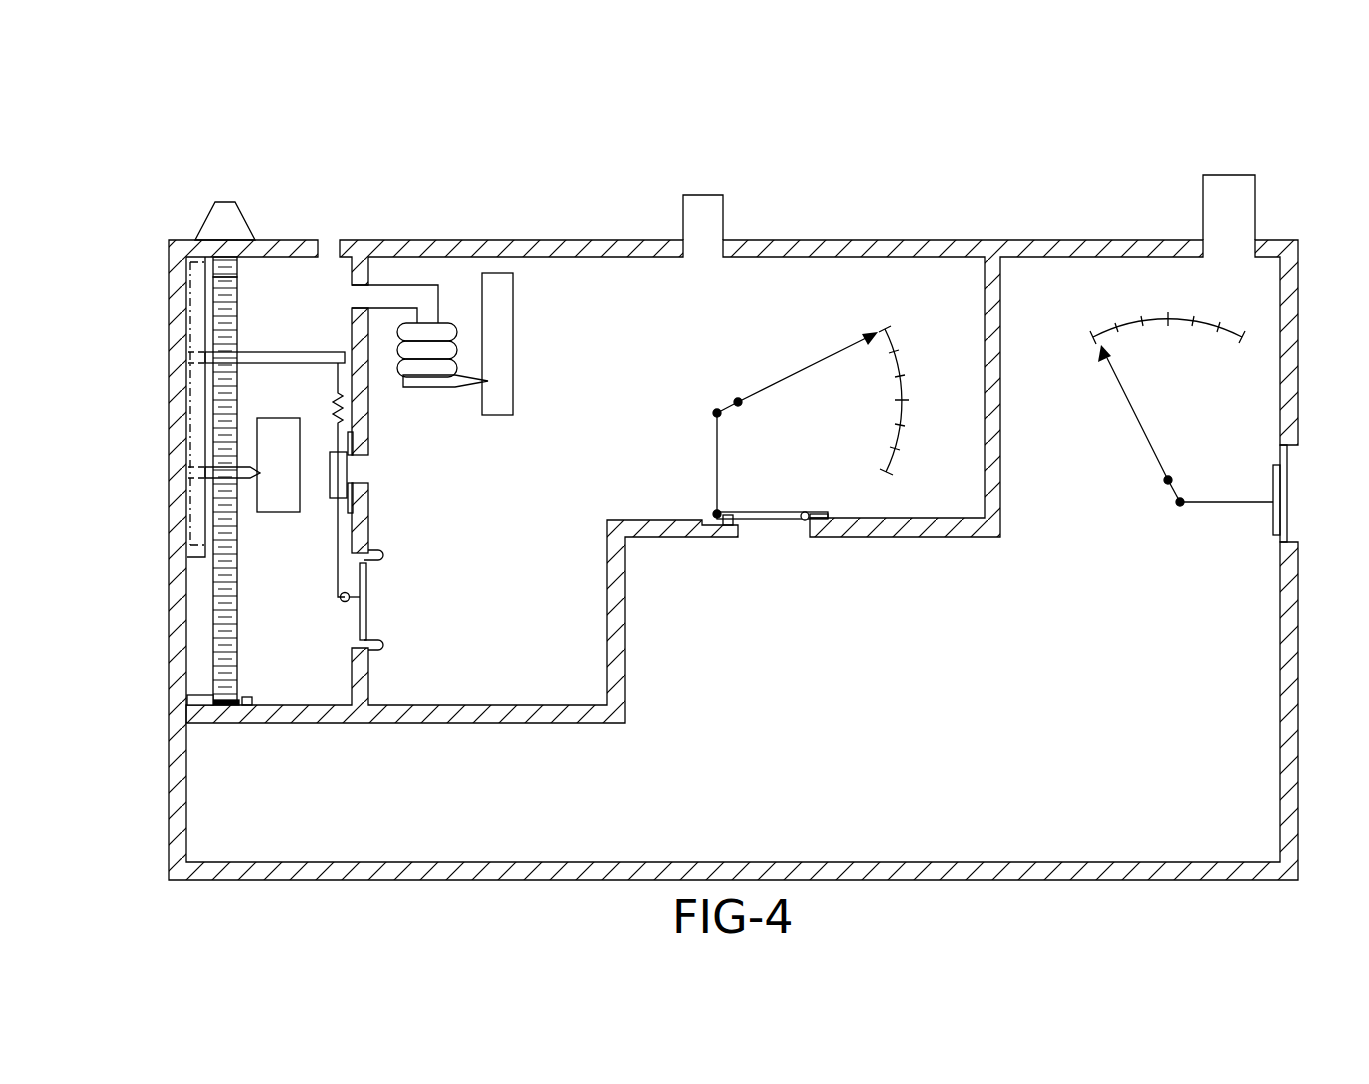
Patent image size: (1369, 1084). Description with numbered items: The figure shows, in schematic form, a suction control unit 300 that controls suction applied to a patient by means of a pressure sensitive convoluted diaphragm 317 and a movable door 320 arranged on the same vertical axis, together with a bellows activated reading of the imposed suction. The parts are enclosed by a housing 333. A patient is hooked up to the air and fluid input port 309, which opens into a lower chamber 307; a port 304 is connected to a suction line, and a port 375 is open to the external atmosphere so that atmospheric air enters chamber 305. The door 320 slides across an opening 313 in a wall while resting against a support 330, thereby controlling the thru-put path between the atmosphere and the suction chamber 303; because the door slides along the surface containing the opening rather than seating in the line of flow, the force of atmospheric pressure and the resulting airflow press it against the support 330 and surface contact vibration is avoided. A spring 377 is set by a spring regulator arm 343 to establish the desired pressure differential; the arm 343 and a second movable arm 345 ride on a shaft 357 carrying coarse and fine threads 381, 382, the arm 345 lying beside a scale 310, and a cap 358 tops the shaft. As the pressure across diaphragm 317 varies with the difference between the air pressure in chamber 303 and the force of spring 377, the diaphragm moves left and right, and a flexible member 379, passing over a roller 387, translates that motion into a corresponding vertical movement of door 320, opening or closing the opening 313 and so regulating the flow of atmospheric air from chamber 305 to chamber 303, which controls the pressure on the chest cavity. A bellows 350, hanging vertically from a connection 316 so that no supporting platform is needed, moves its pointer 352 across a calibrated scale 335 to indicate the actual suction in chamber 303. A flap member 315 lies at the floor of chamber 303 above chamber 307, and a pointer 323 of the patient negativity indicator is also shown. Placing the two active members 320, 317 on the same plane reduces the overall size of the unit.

The suction control unit 300 is at (116, 626).
The suction chamber 303 is at (554, 529).
The suction port 304 is at (723, 212).
The atmospheric chamber 305 is at (327, 679).
The chamber 307 is at (906, 674).
The air and fluid input port 309 is at (1203, 205).
The pressure scale 310 is at (257, 447).
The opening 313 is at (362, 470).
The flapper valve 315 is at (766, 528).
The conduit 316 is at (369, 270).
The convoluted diaphragm 317 is at (367, 618).
The door 320 is at (330, 490).
The patient negativity needle 323 is at (1106, 432).
The support 330 is at (350, 443).
The housing 333 is at (172, 217).
The calibrated scale 335 is at (513, 348).
The spring regulator arm 343 is at (257, 352).
The movable arm 345 is at (210, 480).
The bellows 350 is at (450, 323).
The pointer 352 is at (450, 388).
The shaft 357 is at (213, 302).
The adjustment knob 358 is at (242, 218).
The atmospheric port 375 is at (333, 247).
The spring 377 is at (335, 405).
The flexible member 379 is at (338, 563).
The coarse thread 381 is at (233, 632).
The fine thread 382 is at (222, 283).
The roller 387 is at (350, 594).